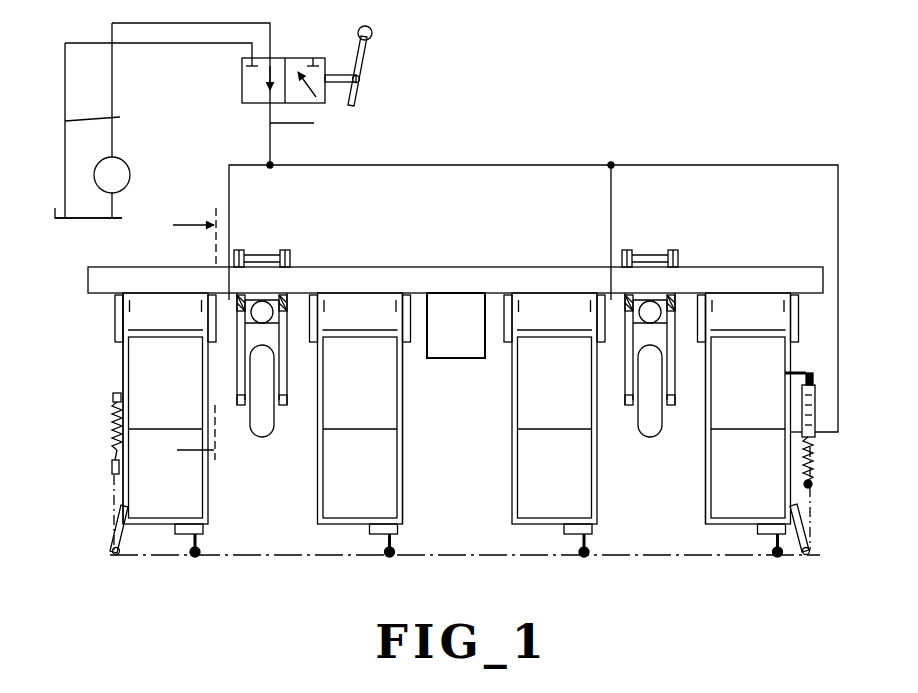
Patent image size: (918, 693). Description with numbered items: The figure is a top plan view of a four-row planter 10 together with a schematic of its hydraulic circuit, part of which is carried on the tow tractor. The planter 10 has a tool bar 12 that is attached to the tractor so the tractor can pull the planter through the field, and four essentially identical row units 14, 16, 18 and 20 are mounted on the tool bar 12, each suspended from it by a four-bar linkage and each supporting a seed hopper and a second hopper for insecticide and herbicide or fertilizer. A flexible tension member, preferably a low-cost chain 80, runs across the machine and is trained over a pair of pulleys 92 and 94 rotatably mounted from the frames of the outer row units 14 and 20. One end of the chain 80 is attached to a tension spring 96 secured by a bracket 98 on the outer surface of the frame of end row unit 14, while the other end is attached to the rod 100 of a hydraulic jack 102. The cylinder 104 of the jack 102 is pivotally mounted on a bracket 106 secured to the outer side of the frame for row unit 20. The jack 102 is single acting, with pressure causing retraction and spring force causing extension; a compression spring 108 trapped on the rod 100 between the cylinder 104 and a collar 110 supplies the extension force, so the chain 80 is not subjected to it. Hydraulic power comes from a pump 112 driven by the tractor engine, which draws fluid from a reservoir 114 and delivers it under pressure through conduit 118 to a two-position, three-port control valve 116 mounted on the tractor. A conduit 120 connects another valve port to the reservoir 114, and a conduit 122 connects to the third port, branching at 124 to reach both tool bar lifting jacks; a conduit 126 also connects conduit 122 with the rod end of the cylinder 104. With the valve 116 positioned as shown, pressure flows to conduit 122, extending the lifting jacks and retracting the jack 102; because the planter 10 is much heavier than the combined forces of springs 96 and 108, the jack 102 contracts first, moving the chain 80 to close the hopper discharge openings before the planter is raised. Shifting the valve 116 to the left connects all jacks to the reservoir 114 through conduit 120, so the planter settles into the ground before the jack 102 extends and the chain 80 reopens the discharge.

The planter 10 is at (604, 128).
The tool bar 12 is at (793, 268).
The row unit 14 is at (212, 505).
The row unit 16 is at (406, 478).
The row unit 18 is at (510, 440).
The row unit 20 is at (703, 505).
The chain 80 is at (300, 565).
The pulley 92 is at (118, 558).
The pulley 94 is at (808, 558).
The tension spring 96 is at (112, 446).
The bracket 98 is at (110, 398).
The rod 100 is at (786, 482).
The hydraulic jack 102 is at (790, 432).
The cylinder 104 is at (800, 412).
The bracket 106 is at (800, 379).
The compression spring 108 is at (818, 480).
The collar 110 is at (820, 486).
The pump 112 is at (116, 166).
The hydraulic reservoir 114 is at (122, 214).
The control valve 116 is at (236, 74).
The conduit 118 is at (112, 23).
The conduit 120 is at (153, 120).
The conduit 122 is at (318, 123).
The branch 124 is at (273, 165).
The conduit 126 is at (722, 165).